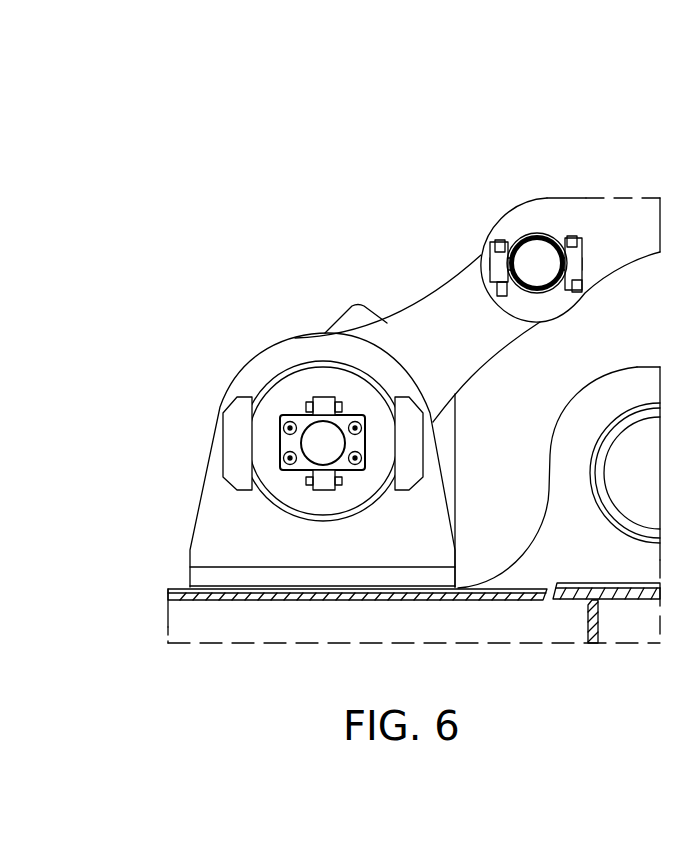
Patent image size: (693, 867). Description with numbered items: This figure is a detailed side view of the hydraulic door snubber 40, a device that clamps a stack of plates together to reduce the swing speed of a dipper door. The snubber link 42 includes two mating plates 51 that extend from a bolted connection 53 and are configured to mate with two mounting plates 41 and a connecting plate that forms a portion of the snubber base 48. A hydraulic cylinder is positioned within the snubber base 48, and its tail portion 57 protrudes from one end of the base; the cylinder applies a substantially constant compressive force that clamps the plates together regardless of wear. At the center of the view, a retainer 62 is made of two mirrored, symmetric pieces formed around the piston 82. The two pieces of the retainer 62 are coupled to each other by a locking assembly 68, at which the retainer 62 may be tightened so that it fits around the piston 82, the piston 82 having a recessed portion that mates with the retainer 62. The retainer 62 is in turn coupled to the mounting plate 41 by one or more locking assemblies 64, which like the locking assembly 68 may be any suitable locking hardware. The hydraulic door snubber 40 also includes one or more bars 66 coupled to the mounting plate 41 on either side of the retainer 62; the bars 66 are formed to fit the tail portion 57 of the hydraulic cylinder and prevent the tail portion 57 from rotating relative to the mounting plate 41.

The hydraulic door snubber 40 is at (366, 250).
The mounting plates 41 is at (427, 533).
The snubber link 42 is at (532, 172).
The snubber base 48 is at (202, 578).
The mating plates 51 is at (421, 330).
The bolted connection 53 is at (538, 278).
The tail portion 57 is at (260, 388).
The retainer 62 is at (307, 400).
The locking assemblies 64 is at (291, 460).
The bars 66 is at (232, 424).
The locking assembly 68 is at (336, 402).
The piston 82 is at (326, 447).